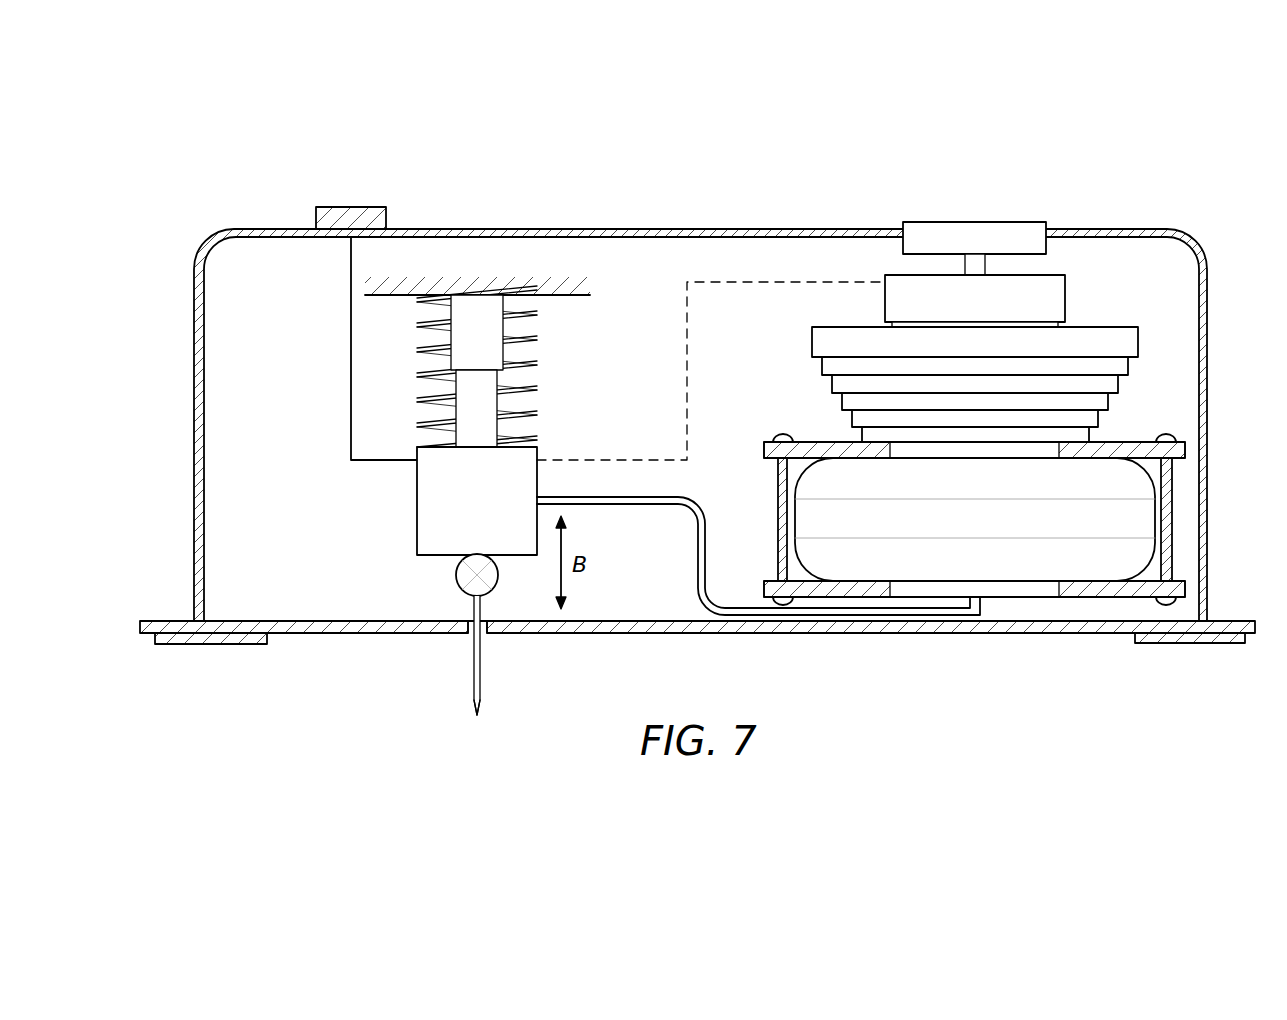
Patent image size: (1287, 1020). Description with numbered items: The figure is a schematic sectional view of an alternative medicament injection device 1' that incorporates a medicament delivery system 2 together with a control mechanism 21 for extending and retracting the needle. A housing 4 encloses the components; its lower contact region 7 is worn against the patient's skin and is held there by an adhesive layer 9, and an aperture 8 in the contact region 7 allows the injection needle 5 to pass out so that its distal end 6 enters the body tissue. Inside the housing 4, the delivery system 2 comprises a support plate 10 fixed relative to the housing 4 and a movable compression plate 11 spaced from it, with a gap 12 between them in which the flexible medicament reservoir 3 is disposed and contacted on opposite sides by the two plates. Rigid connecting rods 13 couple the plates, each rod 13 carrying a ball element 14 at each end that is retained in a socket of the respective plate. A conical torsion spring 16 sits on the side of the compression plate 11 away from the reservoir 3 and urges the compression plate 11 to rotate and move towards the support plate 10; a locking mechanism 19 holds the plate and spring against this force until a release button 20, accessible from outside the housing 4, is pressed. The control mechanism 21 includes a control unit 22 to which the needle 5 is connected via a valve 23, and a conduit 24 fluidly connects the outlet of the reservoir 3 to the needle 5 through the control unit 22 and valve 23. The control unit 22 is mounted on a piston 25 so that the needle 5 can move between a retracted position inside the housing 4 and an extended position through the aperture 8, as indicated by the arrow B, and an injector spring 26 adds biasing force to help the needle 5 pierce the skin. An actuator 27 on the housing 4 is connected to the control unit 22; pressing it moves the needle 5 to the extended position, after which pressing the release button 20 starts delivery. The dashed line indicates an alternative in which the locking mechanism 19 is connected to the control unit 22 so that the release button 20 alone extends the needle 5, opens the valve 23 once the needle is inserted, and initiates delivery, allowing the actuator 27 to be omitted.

The medicament injection device 1' is at (1161, 147).
The medicament delivery system 2 is at (821, 275).
The medicament reservoir 3 is at (1142, 507).
The housing 4 is at (1210, 270).
The injection needle 5 is at (482, 668).
The distal end 6 is at (480, 712).
The contact region 7 is at (318, 633).
The aperture 8 is at (468, 635).
The adhesive layer 9 is at (178, 645).
The support plate 10 is at (1188, 587).
The compression plate 11 is at (1188, 448).
The gap 12 is at (792, 480).
The connecting rod 13 is at (1172, 540).
The ball element 14 is at (780, 438).
The conical torsion spring 16 is at (1100, 398).
The locking mechanism 19 is at (1066, 287).
The release button 20 is at (1018, 222).
The control mechanism 21 is at (299, 324).
The control unit 22 is at (417, 500).
The valve 23 is at (456, 575).
The conduit 24 is at (698, 580).
The piston 25 is at (478, 308).
The injector spring 26 is at (540, 354).
The actuator 27 is at (360, 207).